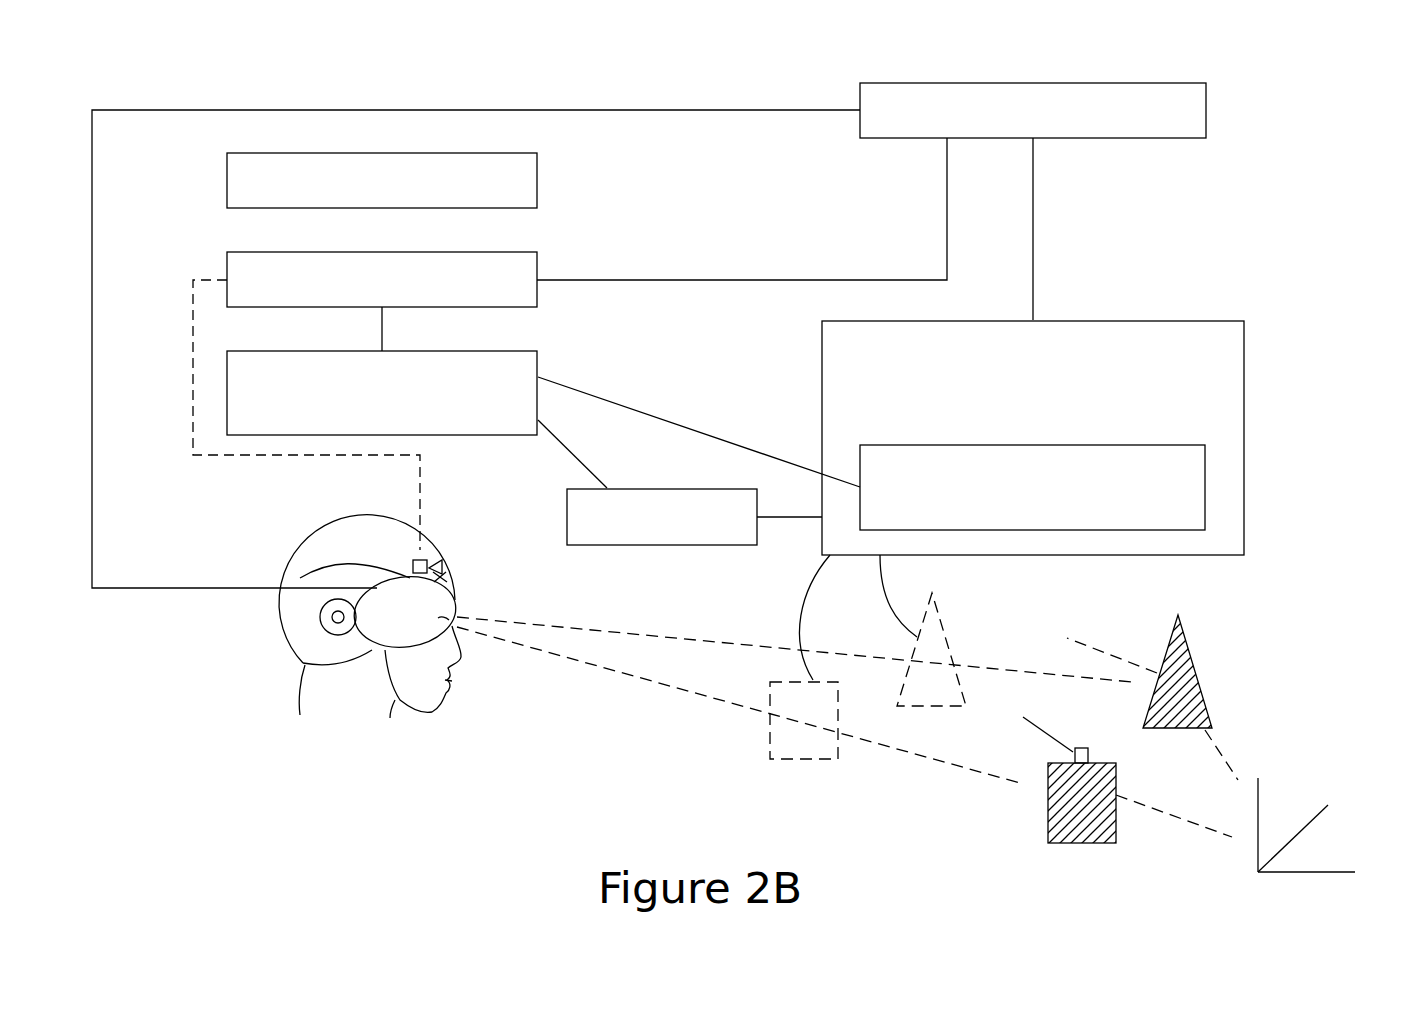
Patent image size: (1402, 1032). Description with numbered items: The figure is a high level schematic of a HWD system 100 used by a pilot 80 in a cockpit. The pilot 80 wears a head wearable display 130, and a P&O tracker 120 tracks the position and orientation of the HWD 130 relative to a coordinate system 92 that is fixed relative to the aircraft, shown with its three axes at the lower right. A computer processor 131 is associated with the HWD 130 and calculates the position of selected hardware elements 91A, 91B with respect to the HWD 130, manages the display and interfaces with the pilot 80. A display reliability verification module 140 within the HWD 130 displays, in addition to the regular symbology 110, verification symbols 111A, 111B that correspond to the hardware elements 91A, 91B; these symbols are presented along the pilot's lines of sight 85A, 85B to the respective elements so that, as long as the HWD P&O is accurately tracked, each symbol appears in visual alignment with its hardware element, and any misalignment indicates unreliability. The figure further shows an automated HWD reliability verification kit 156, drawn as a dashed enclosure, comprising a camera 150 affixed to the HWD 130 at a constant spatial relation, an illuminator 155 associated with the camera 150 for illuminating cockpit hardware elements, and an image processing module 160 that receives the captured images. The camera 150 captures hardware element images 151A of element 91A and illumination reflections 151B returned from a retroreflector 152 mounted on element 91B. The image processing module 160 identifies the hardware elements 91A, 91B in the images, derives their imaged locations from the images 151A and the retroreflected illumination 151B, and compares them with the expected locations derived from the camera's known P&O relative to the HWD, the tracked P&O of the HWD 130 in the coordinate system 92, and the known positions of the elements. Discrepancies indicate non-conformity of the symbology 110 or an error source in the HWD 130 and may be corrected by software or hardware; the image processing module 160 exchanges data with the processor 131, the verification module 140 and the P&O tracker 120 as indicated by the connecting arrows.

The HWD system 100 is at (178, 52).
The illuminator 155 is at (302, 153).
The camera 150 is at (302, 252).
The automated HWD reliability verification kit 156 is at (185, 242).
The image processing module 160 is at (302, 351).
The position and orientation tracker 120 is at (925, 83).
The head wearable display 130 is at (822, 342).
The display reliability verification module 140 is at (935, 445).
The computer processor 131 is at (693, 489).
The symbology 110 is at (441, 578).
The pilot 80 is at (290, 563).
The line of sight 85A is at (600, 628).
The line of sight 85B is at (607, 665).
The verification symbol 111A is at (940, 617).
The verification symbol 111B is at (770, 732).
The hardware element image 151A is at (1115, 655).
The illumination reflection 151B is at (1057, 752).
The hardware element 91A is at (1195, 665).
The hardware element 91B is at (1048, 773).
The retroreflector 152 is at (1090, 755).
The coordinate system 92 is at (1305, 828).